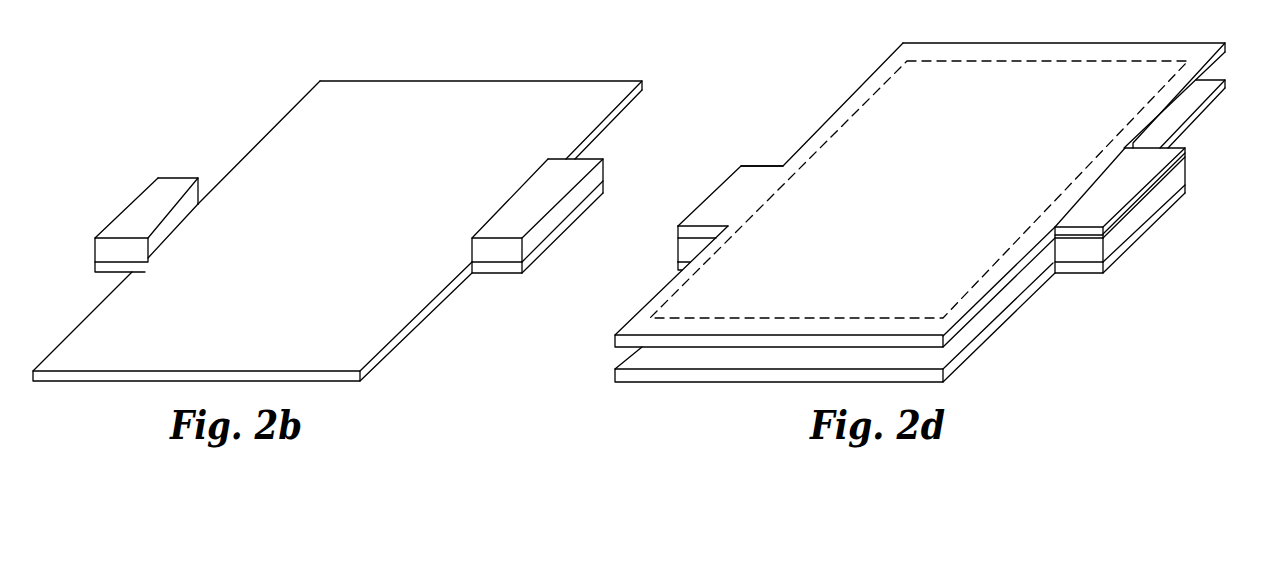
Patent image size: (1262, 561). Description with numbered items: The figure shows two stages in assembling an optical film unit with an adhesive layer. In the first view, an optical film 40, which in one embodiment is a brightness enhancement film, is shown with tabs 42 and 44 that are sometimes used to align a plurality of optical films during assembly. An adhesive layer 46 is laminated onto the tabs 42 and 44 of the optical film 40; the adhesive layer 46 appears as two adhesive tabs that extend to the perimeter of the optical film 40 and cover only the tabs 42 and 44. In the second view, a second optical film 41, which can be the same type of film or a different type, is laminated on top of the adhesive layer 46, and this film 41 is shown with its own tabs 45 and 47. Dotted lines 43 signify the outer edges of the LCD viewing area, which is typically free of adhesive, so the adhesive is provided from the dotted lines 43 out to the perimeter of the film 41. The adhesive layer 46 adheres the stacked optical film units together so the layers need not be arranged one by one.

In FIG. 2b, the optical film 40 is at (267, 160).
In FIG. 2d, the optical film 41 is at (829, 126).
In FIG. 2b, the tab 42 is at (505, 270).
In FIG. 2d, the tab 42 is at (1080, 270).
In FIG. 2d, the dotted lines 43 is at (967, 293).
In FIG. 2b, the tab 44 is at (97, 269).
In FIG. 2d, the tab 44 is at (680, 269).
In FIG. 2d, the tab 45 is at (717, 195).
In FIG. 2b, the adhesive layer 46 is at (145, 200).
In FIG. 2d, the adhesive layer 46 is at (685, 249).
In FIG. 2d, the tab 47 is at (1178, 155).